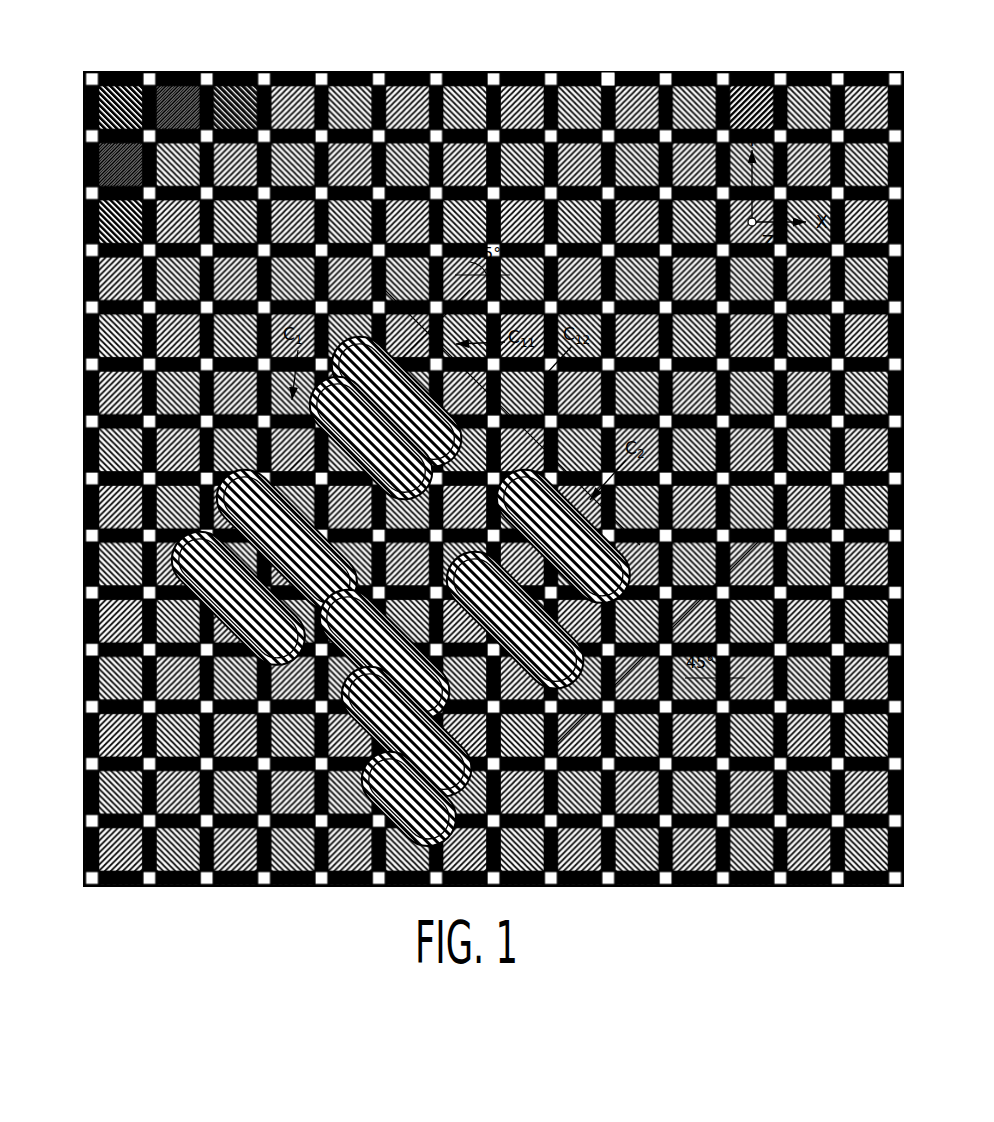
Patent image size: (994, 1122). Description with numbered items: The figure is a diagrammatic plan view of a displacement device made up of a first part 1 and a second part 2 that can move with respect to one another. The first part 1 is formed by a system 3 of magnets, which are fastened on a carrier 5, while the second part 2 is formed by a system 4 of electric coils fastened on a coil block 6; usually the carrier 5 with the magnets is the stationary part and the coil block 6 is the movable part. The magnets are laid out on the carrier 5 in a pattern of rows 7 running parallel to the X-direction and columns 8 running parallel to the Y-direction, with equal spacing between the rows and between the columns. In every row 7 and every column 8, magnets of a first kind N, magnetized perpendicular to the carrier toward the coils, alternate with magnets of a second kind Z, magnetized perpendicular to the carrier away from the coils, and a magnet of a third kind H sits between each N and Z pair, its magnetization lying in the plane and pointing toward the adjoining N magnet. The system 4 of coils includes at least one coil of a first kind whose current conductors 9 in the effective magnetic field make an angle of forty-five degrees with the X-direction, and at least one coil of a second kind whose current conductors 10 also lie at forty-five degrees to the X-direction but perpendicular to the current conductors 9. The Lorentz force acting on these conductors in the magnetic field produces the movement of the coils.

The first part 1 is at (812, 70).
The second part 2 is at (585, 440).
The system of magnets 3 is at (752, 106).
The system of electric coils 4 is at (528, 440).
The carrier 5 is at (606, 72).
The coil block 6 is at (542, 745).
The rows 7 is at (82, 108).
The columns 8 is at (120, 70).
The current conductors of the coil of the first kind 9 is at (382, 332).
The current conductors of the coil of the second kind 10 is at (612, 548).